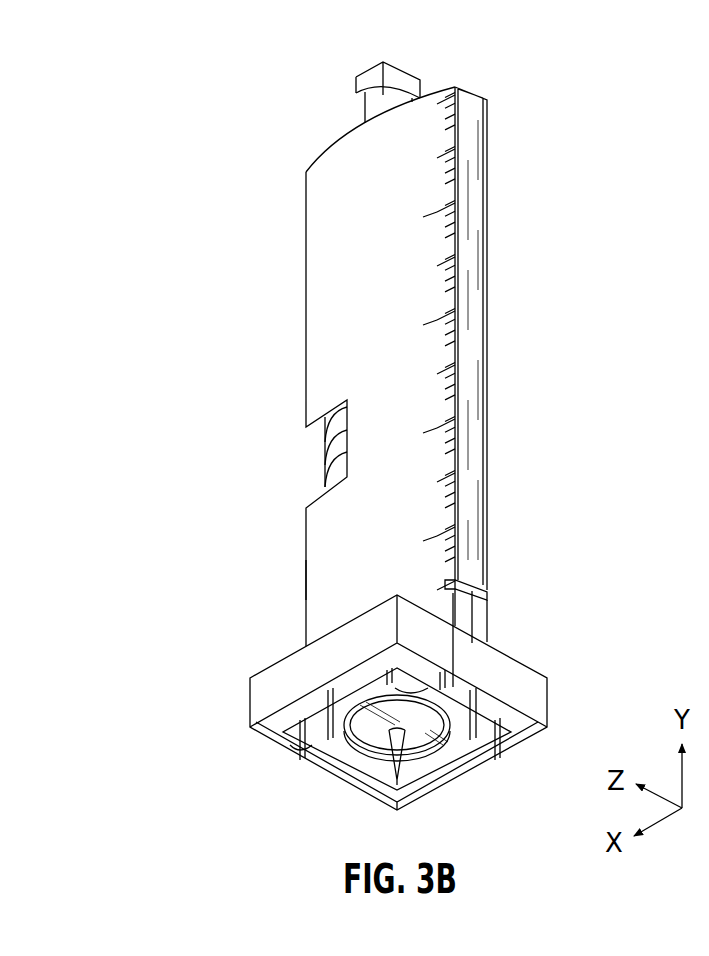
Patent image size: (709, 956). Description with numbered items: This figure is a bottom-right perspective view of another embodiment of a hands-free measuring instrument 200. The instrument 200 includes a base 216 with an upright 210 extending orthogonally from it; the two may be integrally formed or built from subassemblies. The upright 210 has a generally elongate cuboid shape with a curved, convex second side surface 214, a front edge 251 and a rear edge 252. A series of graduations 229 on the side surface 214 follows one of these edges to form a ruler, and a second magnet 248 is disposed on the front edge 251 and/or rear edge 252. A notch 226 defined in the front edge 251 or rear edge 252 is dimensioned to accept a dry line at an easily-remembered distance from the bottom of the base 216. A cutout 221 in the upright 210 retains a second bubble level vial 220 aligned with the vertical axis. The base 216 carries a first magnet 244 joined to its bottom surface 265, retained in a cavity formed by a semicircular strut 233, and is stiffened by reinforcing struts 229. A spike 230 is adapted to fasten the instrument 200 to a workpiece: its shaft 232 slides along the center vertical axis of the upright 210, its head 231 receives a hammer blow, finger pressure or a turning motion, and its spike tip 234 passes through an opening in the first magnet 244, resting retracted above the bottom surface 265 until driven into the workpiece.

The measuring instrument 200 is at (521, 79).
The upright 210 is at (304, 207).
The second side surface 214 is at (322, 283).
The base 216 is at (258, 660).
The second bubble level vial 220 is at (326, 447).
The cutout 221 is at (318, 500).
The notch 226 is at (486, 592).
The reinforcing struts 229 is at (423, 372).
The spike 230 is at (353, 73).
The head 231 is at (405, 78).
The shaft 232 is at (375, 118).
The semicircular strut 233 is at (345, 735).
The spike tip 234 is at (385, 765).
The first magnet 244 is at (430, 745).
The second magnet 248 is at (472, 250).
The front edge 251 is at (306, 577).
The rear edge 252 is at (489, 408).
The bottom surface 265 is at (420, 816).